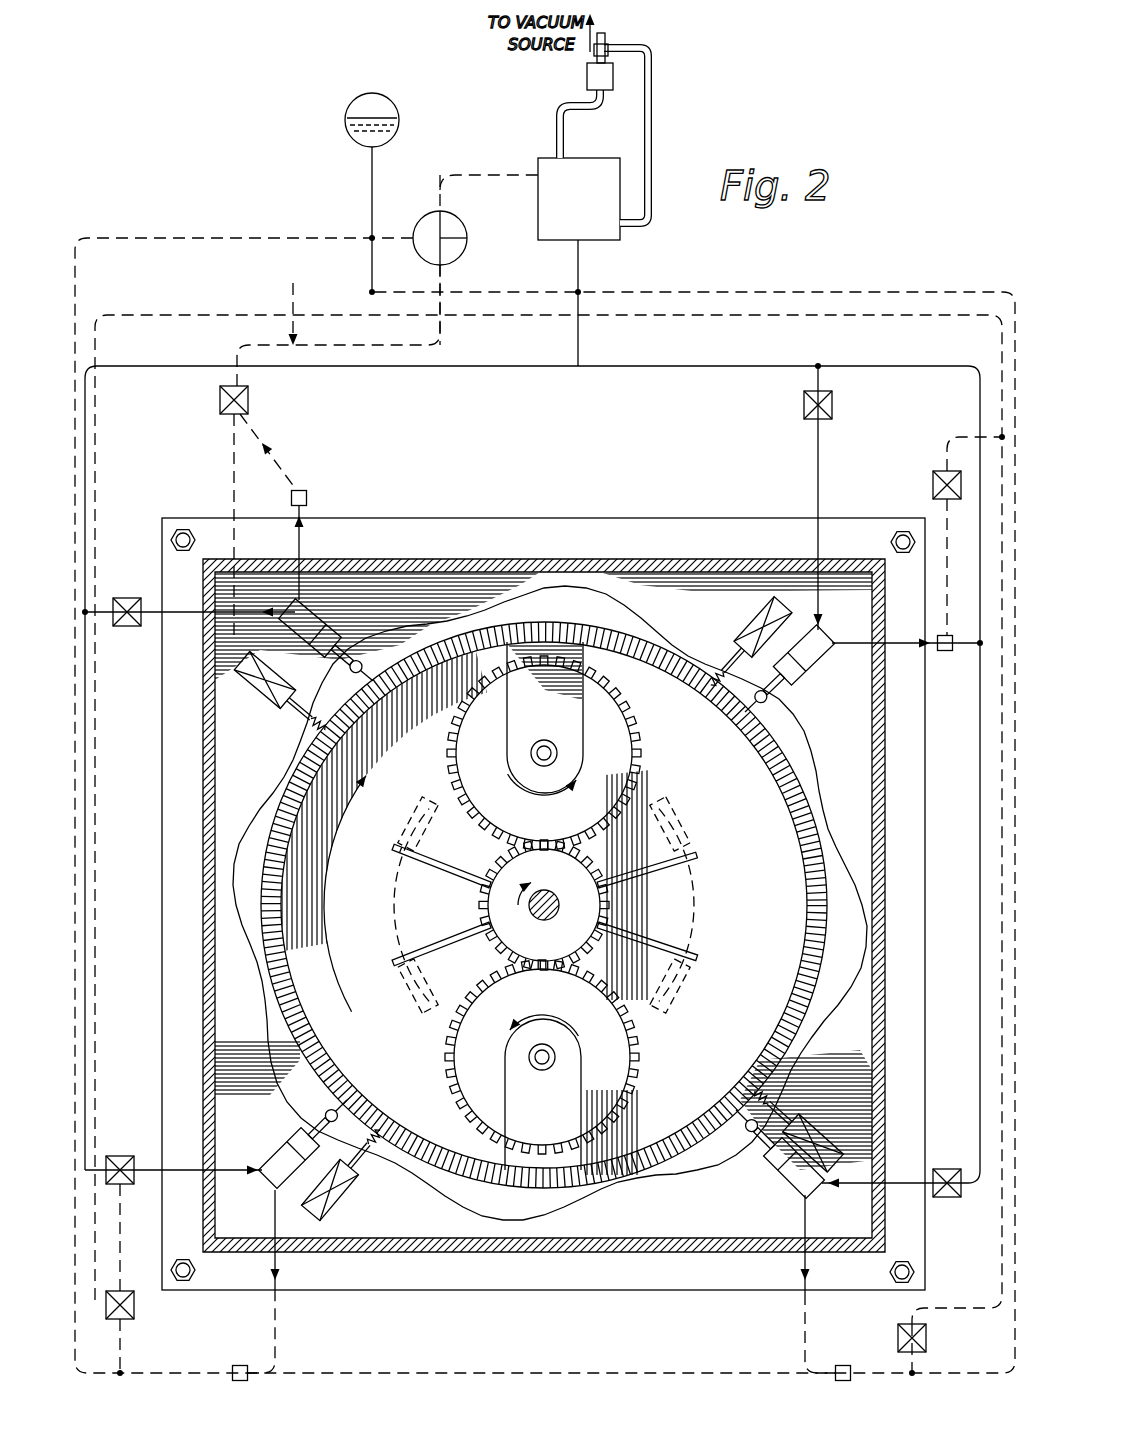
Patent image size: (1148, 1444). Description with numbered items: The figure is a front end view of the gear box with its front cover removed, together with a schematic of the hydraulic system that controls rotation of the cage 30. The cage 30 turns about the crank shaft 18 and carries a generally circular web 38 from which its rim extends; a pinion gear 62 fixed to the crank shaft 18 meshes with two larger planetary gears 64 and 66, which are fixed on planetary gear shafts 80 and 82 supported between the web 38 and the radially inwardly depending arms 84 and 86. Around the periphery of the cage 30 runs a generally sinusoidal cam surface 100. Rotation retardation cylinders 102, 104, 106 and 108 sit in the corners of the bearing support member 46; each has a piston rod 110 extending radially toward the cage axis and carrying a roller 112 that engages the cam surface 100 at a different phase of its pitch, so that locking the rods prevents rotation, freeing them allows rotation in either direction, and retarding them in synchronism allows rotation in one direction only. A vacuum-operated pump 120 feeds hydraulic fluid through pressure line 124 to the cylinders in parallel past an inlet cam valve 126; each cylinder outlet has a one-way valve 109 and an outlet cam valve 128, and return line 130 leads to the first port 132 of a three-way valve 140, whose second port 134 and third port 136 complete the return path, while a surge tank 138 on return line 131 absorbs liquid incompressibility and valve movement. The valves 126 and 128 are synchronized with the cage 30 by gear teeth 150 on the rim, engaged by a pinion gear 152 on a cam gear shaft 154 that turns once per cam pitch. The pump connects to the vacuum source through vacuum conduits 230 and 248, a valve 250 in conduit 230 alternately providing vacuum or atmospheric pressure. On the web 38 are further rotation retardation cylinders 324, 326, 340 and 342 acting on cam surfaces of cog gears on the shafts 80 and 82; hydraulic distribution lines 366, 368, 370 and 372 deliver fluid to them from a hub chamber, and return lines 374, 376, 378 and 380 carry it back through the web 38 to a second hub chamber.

The crank shaft 18 is at (552, 915).
The cage 30 is at (544, 905).
The web 38 is at (345, 765).
The bearing support member 46 is at (855, 720).
The pinion gear 62 is at (598, 905).
The planetary gear 64 is at (605, 1135).
The planetary gear 66 is at (620, 766).
The planetary gear shaft 80 is at (532, 1062).
The planetary gear shaft 82 is at (555, 750).
The arm 84 is at (590, 1140).
The second arm 86 is at (570, 680).
The cam surface 100 is at (640, 624).
The rotation retardation cylinder 102 is at (318, 606).
The rotation retardation cylinder 104 is at (282, 1150).
The rotation retardation cylinder 106 is at (788, 1177).
The rotation retardation cylinder 108 is at (800, 672).
The one-way valve 109 is at (308, 496).
The piston rod 110 is at (375, 655).
The roller 112 is at (330, 700).
The pump 120 is at (605, 232).
The hydraulic pressure line 124 is at (580, 290).
The inlet cam valve 126 is at (127, 598).
The outlet cam valve 128 is at (250, 403).
The return line 130 is at (548, 791).
The return line 131 is at (385, 432).
The first port 132 is at (448, 262).
The second port 134 is at (445, 214).
The third port 136 is at (418, 225).
The surge tank 138 is at (355, 105).
The three-way valve 140 is at (456, 230).
The gear teeth 150 is at (343, 1097).
The pinion gear 152 is at (385, 1120).
The cam gear shaft 154 is at (348, 1198).
The vacuum conduit 230 is at (557, 135).
The vacuum conduit 248 is at (650, 116).
The valve 250 is at (587, 80).
The rotation retardation cylinder 324 is at (690, 830).
The rotation retardation cylinder 326 is at (680, 1005).
The rotation retardation cylinder 340 is at (412, 812).
The rotation retardation cylinder 342 is at (398, 1005).
The hydraulic distribution line 366 is at (660, 845).
The hydraulic distribution line 368 is at (680, 935).
The hydraulic distribution line 370 is at (410, 960).
The hydraulic distribution line 372 is at (452, 862).
The hydraulic return line 374 is at (690, 870).
The hydraulic return line 376 is at (650, 960).
The hydraulic return line 378 is at (440, 945).
The hydraulic return line 380 is at (455, 870).